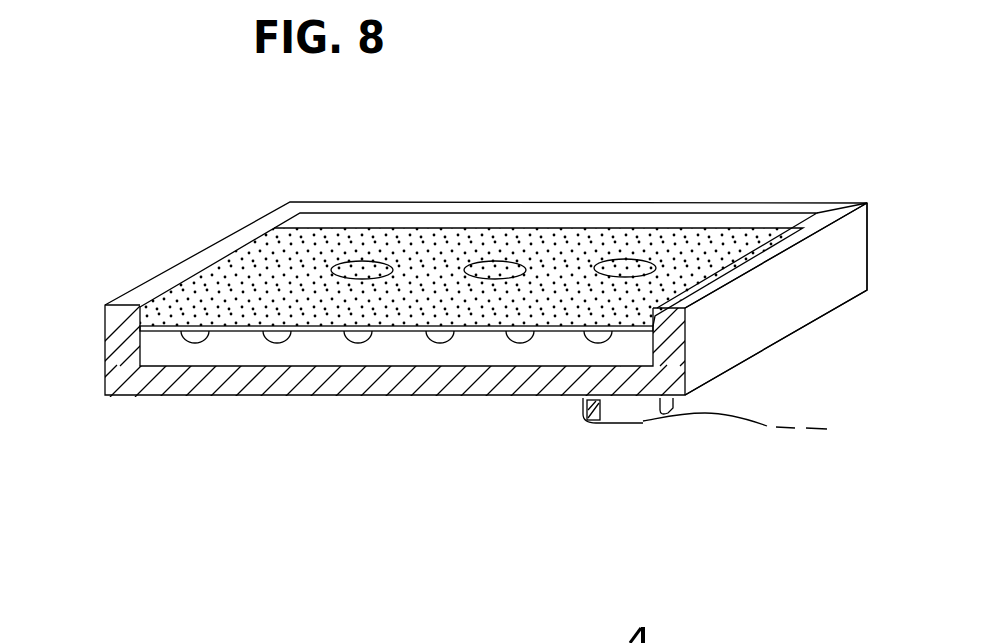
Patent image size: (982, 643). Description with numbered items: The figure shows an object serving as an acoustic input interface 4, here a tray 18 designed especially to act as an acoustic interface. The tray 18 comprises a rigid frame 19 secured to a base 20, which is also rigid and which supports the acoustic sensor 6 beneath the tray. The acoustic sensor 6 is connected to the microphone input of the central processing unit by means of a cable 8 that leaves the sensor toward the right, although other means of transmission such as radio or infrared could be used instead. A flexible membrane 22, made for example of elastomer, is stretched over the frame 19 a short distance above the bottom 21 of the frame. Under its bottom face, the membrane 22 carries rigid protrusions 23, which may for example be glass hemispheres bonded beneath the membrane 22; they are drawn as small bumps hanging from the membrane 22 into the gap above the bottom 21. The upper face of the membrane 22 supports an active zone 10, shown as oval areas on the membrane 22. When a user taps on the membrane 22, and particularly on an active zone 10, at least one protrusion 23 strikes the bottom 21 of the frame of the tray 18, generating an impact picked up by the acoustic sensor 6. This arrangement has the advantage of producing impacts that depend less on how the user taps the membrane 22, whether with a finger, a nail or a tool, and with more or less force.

The acoustic input interface 4 is at (497, 118).
The tray 18 is at (592, 165).
The base 20 is at (830, 213).
The rigid frame 19 is at (777, 307).
The bottom of the frame 21 is at (560, 380).
The flexible membrane 22 is at (243, 332).
The rigid protrusions 23 is at (507, 337).
The active zone 10 is at (618, 267).
The acoustic sensor 6 is at (637, 410).
The cable 8 is at (755, 425).